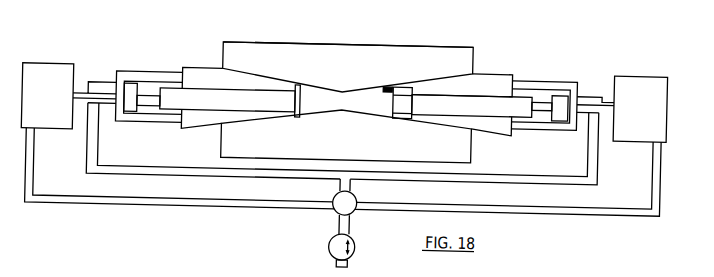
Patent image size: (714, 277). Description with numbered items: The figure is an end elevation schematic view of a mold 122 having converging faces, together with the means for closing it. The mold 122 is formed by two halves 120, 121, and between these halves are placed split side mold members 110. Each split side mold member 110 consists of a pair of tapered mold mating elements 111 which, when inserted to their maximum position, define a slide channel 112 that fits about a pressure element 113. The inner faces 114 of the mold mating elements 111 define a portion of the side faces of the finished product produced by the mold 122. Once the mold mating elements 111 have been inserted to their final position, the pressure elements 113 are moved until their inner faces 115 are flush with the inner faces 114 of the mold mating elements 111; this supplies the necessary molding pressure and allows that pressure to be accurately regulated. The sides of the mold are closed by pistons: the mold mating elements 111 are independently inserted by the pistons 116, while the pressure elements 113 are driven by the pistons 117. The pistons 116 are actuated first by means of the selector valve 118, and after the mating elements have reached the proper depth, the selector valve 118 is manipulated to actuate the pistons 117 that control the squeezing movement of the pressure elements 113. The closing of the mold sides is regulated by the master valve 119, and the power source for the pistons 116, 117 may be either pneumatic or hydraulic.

The split side mold member 110 is at (366, 84).
The mold mating element 111 is at (231, 72).
The slide channel 112 is at (202, 81).
The pressure element 113 is at (287, 104).
The inner face of mold mating element 114 is at (387, 87).
The inner face of pressure element 115 is at (403, 103).
The piston 116 is at (80, 99).
The piston 117 is at (148, 99).
The selector valve 118 is at (362, 190).
The master valve 119 is at (365, 240).
The mold half 120 is at (332, 50).
The mold half 121 is at (221, 151).
The mold 122 is at (436, 37).